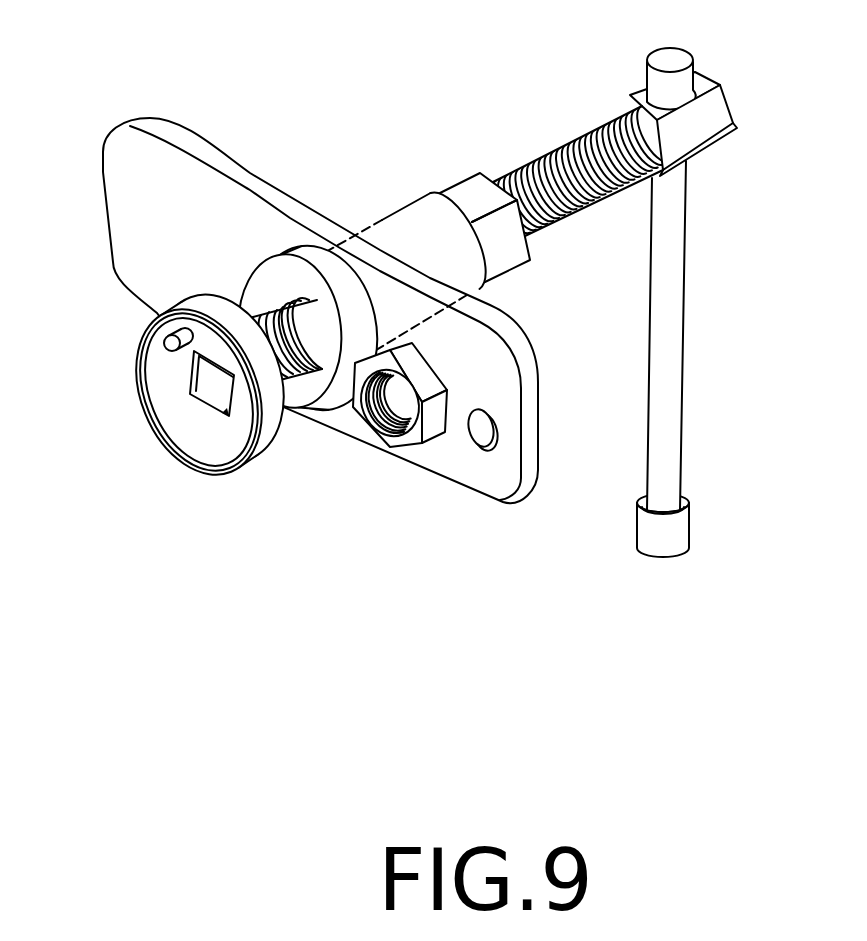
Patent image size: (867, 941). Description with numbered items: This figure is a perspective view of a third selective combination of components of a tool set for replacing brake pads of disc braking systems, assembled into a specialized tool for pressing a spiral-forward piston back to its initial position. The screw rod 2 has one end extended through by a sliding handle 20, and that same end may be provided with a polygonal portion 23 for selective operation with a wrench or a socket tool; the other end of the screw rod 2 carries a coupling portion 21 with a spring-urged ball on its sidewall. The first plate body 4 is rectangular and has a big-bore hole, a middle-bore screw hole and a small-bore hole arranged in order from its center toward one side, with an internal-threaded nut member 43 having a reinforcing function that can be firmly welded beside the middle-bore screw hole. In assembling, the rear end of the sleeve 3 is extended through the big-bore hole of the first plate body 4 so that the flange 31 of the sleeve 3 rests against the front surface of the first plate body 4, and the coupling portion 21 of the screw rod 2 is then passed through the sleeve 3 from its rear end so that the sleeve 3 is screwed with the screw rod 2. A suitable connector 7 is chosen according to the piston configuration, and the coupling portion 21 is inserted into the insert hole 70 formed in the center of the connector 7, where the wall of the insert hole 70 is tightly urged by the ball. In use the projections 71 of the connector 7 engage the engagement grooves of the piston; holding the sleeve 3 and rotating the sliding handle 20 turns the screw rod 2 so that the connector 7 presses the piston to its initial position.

The screw rod 2 is at (540, 155).
The sliding handle 20 is at (672, 345).
The polygonal portion 23 is at (715, 118).
The sleeve 3 is at (390, 227).
The flange 31 is at (317, 388).
The first plate body 4 is at (182, 173).
The internal-threaded nut member 43 is at (406, 442).
The connector 7 is at (191, 474).
The insert hole 70 is at (210, 404).
The projections 71 is at (168, 341).
The coupling portion 21 is at (210, 380).